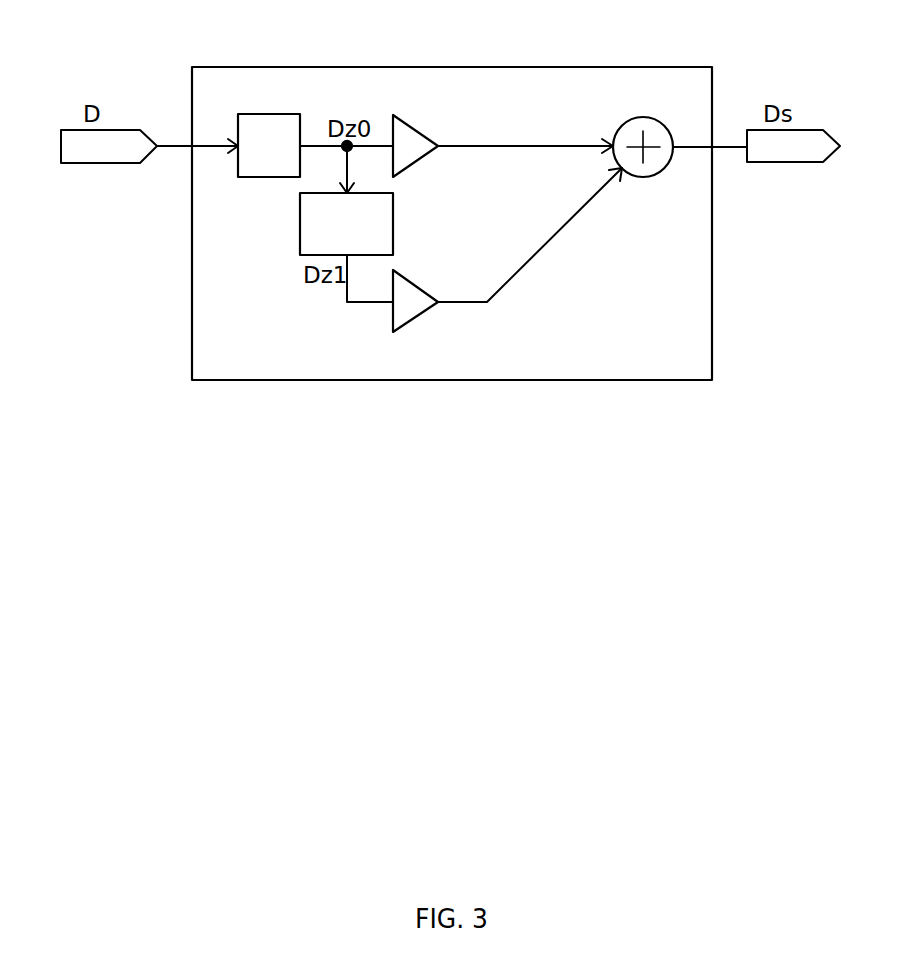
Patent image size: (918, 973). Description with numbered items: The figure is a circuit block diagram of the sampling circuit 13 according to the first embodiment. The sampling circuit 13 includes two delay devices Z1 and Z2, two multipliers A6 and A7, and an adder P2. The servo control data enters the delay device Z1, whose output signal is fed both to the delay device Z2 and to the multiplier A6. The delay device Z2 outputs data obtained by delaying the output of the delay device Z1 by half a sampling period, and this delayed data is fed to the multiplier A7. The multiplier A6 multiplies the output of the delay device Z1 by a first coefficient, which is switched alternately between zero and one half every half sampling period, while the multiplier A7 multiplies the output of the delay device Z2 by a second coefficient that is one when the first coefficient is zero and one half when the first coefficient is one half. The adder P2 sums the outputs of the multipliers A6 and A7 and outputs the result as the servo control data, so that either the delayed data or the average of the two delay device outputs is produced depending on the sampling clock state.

The sampling circuit 13 is at (455, 67).
The delay device Z1 is at (270, 114).
The delay device Z2 is at (393, 222).
The multiplier A6 is at (394, 116).
The multiplier A7 is at (394, 271).
The adder P2 is at (643, 117).